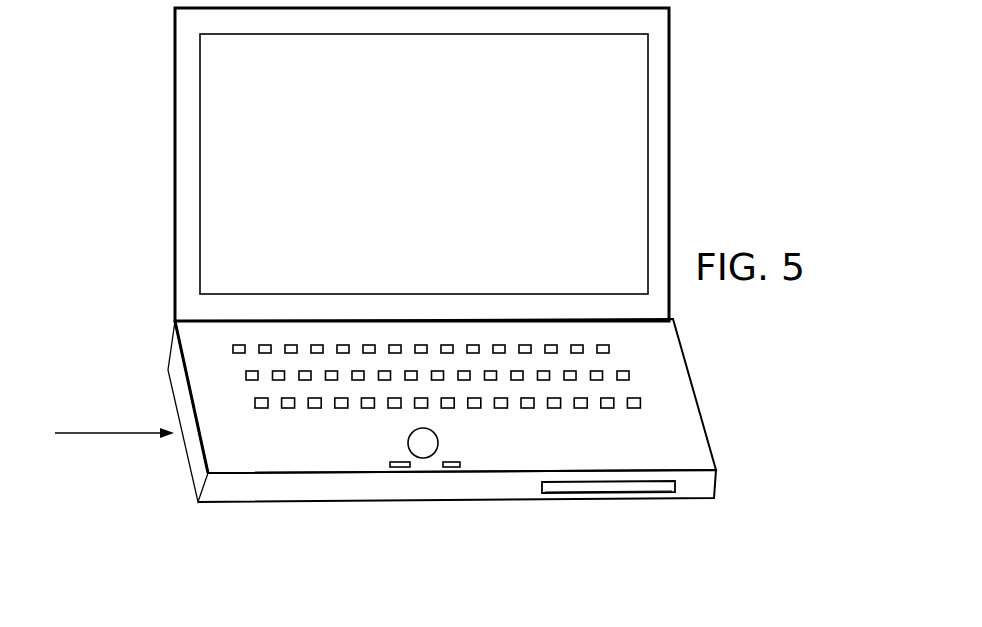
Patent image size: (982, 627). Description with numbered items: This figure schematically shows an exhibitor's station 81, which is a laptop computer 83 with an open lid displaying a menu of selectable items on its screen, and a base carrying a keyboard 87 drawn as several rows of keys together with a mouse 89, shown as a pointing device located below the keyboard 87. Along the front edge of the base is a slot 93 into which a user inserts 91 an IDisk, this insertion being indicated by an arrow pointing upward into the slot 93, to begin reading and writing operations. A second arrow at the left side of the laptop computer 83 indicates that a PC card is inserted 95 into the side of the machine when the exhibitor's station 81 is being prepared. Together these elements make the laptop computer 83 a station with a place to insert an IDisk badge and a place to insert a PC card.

The exhibitor's station 81 is at (681, 37).
The laptop computer 83 is at (671, 113).
The keyboard 87 is at (686, 362).
The mouse 89 is at (424, 443).
The insertion of IDisk 91 is at (616, 506).
The slot 93 is at (658, 484).
The insertion of PC card 95 is at (115, 433).